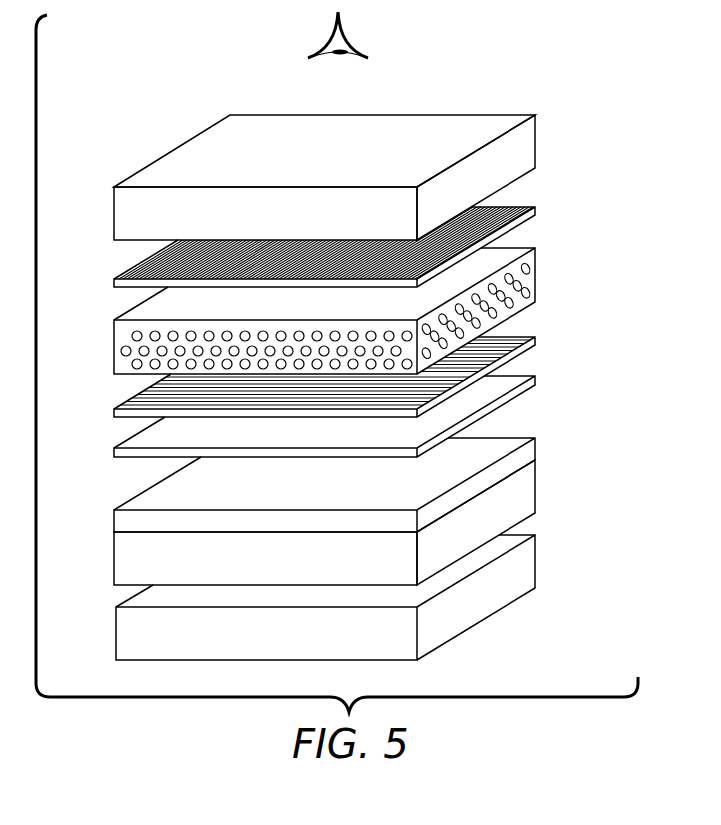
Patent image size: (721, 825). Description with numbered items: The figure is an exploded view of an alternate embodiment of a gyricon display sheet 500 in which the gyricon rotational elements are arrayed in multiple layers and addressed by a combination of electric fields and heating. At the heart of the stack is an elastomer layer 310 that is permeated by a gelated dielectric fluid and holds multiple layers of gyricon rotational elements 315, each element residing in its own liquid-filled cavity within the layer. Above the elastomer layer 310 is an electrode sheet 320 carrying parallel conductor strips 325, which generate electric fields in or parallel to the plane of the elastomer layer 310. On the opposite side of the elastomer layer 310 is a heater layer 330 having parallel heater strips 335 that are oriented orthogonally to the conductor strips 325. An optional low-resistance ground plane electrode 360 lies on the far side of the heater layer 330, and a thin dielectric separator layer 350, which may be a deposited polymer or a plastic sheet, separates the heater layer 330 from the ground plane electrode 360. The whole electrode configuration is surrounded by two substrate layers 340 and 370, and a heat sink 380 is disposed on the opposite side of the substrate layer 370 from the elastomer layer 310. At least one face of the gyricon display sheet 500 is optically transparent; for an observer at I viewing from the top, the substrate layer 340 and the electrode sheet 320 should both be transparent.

The gyricon display sheet 500 is at (495, 98).
The substrate layer 340 is at (532, 152).
The electrode sheet 320 is at (533, 217).
The parallel conductor strips 325 is at (162, 262).
The elastomer layer 310 is at (533, 257).
The gyricon rotational elements 315 is at (521, 298).
The heater layer 330 is at (535, 343).
The parallel heater strips 335 is at (165, 396).
The thin dielectric separator layer 350 is at (535, 386).
The low-resistance ground plane electrode 360 is at (535, 453).
The substrate layer 370 is at (535, 495).
The heat sink 380 is at (535, 567).
The observer I is at (348, 35).